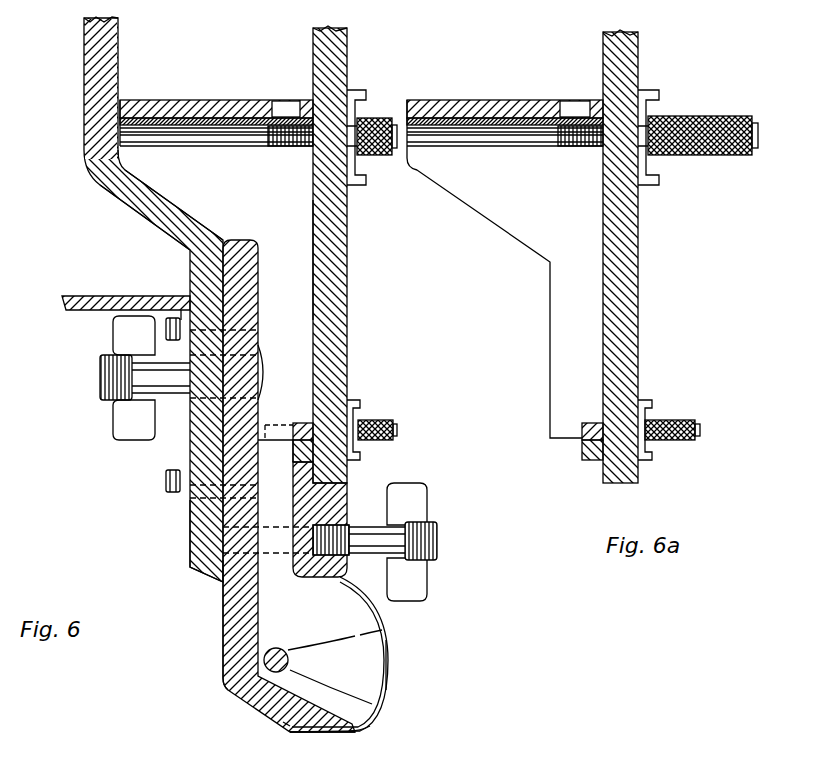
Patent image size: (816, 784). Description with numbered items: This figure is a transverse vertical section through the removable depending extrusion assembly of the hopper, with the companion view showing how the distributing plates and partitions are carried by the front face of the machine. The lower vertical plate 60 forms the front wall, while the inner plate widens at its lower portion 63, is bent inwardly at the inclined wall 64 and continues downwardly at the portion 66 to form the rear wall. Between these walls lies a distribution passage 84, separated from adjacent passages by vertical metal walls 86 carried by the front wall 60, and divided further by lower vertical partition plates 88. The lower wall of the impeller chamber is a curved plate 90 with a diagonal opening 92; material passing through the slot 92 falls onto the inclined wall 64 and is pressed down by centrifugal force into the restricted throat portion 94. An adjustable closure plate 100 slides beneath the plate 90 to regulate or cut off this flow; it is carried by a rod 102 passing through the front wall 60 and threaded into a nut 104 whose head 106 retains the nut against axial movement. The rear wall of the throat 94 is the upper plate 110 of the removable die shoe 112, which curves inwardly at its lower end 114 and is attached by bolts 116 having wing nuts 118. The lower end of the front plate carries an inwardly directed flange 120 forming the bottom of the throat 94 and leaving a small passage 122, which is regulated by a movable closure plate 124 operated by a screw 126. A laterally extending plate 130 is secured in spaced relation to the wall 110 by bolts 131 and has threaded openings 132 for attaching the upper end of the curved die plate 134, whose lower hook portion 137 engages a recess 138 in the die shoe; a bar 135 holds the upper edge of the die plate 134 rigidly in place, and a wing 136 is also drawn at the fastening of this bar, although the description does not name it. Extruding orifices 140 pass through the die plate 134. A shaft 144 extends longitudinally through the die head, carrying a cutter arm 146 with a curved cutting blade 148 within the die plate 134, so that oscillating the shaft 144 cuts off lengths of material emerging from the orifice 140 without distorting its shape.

In FIG. 6, the lower vertical plate 60 is at (348, 214).
In FIG. 6A, the lower vertical plate 60 is at (640, 272).
In FIG. 6, the lower portion of the vertical plate 63 is at (96, 176).
In FIG. 6, the inwardly bent portion 64 is at (152, 229).
In FIG. 6, the downwardly extending portion 66 is at (200, 543).
In FIG. 6, the distribution passage 84 is at (142, 205).
In FIG. 6, the vertical metal wall 86 is at (126, 152).
In FIG. 6A, the vertical metal wall 86 is at (530, 228).
In FIG. 6, the lower vertical partition plate 88 is at (270, 620).
In FIG. 6, the curved plate 90 is at (222, 101).
In FIG. 6A, the curved plate 90 is at (526, 106).
In FIG. 6, the diagonal opening 92 is at (284, 101).
In FIG. 6A, the diagonal opening 92 is at (575, 101).
In FIG. 6, the restricted throat portion 94 is at (342, 262).
In FIG. 6, the adjustable closure plate 100 is at (210, 129).
In FIG. 6A, the adjustable closure plate 100 is at (497, 130).
In FIG. 6, the rod 102 is at (276, 133).
In FIG. 6A, the rod 102 is at (551, 135).
In FIG. 6, the nut 104 is at (386, 120).
In FIG. 6A, the nut 104 is at (710, 118).
In FIG. 6, the head 106 is at (356, 100).
In FIG. 6A, the head 106 is at (648, 137).
In FIG. 6, the upper plate of the die shoe 110 is at (206, 443).
In FIG. 6, the removable die shoe 112 is at (232, 603).
In FIG. 6, the inwardly curved lower end 114 is at (322, 727).
In FIG. 6, the bolt 116 is at (106, 377).
In FIG. 6, the wing nut 118 is at (116, 428).
In FIG. 6, the inwardly directed flange 120 is at (313, 450).
In FIG. 6A, the inwardly directed flange 120 is at (587, 455).
In FIG. 6, the passage 122 is at (281, 445).
In FIG. 6, the movable closure plate 124 is at (313, 428).
In FIG. 6A, the movable closure plate 124 is at (582, 429).
In FIG. 6, the screw 126 is at (396, 431).
In FIG. 6A, the screw 126 is at (698, 423).
In FIG. 6, the laterally extending plate 130 is at (332, 496).
In FIG. 6, the bolt 131 is at (172, 520).
In FIG. 6, the threaded opening 132 is at (347, 527).
In FIG. 6, the curved die plate 134 is at (385, 621).
In FIG. 6, the bar 135 is at (400, 521).
In FIG. 6, the wing 136 is at (420, 576).
In FIG. 6, the hook portion 137 is at (287, 722).
In FIG. 6, the recess 138 is at (236, 706).
In FIG. 6, the extruding orifice 140 is at (380, 723).
In FIG. 6, the shaft 144 is at (264, 661).
In FIG. 6, the cutter arm 146 is at (316, 650).
In FIG. 6, the cutting blade 148 is at (391, 662).